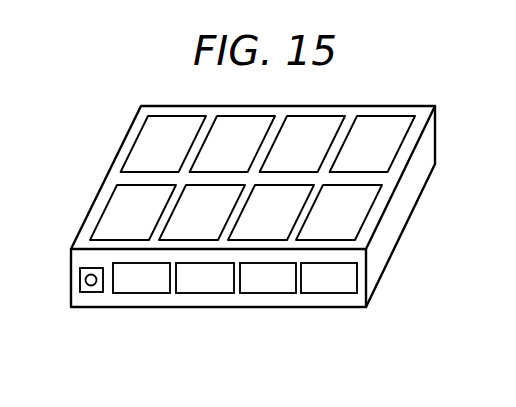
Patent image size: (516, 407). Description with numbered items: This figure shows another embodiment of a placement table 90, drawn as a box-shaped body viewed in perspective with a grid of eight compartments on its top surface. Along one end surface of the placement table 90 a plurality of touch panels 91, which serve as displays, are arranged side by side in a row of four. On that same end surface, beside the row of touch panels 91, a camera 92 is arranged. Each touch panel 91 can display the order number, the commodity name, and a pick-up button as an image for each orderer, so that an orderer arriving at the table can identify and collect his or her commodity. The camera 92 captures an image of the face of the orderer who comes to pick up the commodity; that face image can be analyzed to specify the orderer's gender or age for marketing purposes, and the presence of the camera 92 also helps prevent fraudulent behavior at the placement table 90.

The placement table 90 is at (437, 135).
The touch panel 91 is at (142, 295).
The camera 92 is at (76, 276).